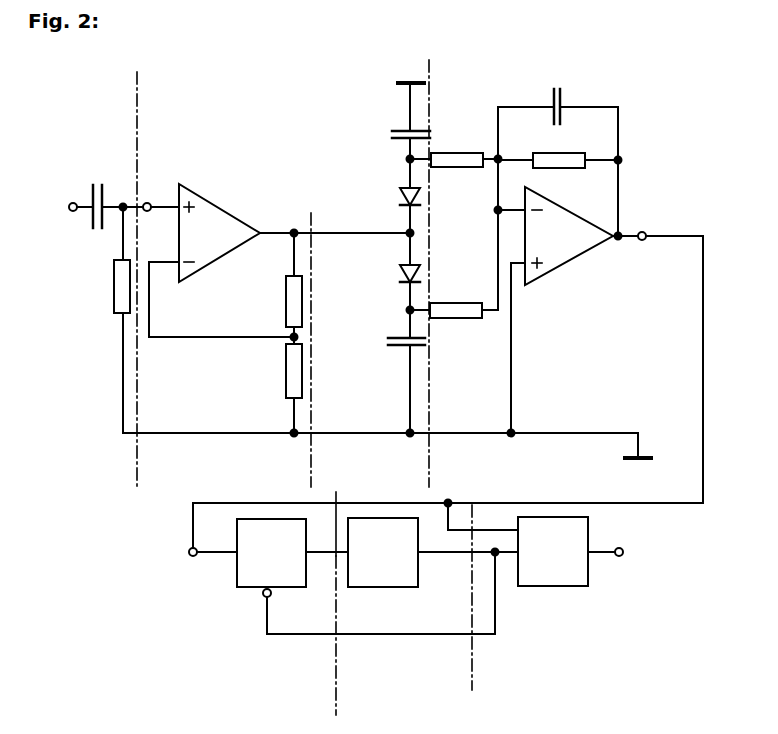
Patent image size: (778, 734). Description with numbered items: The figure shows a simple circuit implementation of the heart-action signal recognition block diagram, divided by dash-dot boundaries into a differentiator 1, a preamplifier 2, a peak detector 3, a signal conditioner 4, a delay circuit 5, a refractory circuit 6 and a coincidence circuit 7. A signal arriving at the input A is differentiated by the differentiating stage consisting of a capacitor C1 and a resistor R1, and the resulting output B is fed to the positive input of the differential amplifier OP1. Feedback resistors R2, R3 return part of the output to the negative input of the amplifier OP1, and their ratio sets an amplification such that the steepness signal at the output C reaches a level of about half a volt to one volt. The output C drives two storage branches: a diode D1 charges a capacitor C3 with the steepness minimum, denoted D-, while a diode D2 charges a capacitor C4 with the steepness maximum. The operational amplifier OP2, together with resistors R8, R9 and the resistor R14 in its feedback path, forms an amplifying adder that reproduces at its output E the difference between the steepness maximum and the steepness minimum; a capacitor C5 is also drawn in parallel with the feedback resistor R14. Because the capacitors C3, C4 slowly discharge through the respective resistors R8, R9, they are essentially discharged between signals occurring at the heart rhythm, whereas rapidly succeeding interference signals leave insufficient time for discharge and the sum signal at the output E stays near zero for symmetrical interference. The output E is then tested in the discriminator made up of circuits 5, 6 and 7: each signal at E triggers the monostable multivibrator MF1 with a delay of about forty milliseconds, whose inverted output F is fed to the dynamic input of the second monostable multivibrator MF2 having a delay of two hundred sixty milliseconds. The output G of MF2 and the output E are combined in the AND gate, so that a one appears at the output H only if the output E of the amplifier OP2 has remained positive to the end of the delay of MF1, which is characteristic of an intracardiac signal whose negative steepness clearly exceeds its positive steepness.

The differentiator 1 is at (185, 473).
The preamplifier 2 is at (345, 473).
The peak detector 3 is at (510, 473).
The signal conditioner 4 is at (436, 473).
The delay circuit 5 is at (370, 680).
The refractory circuit 6 is at (535, 680).
The coincidence circuit 7 is at (577, 624).
The input A is at (73, 197).
The differentiator output B is at (150, 198).
The preamplifier output C is at (284, 226).
The steepness minimum output D- is at (420, 217).
The output of the testing stage E is at (646, 226).
The delay circuit output F is at (320, 578).
The refractory circuit output G is at (443, 585).
The output H is at (617, 564).
The capacitor C1 is at (115, 192).
The resistor R1 is at (107, 320).
The differential amplifier OP1 is at (221, 260).
The feedback resistor R2 is at (274, 288).
The feedback resistor R3 is at (274, 390).
The capacitor C3 is at (395, 135).
The resistor R8 is at (456, 145).
The diode D1 is at (392, 212).
The diode D2 is at (392, 289).
The resistor R9 is at (454, 330).
The capacitor C4 is at (392, 382).
The capacitor C5 is at (558, 159).
The feedback resistor R14 is at (560, 145).
The operational amplifier OP2 is at (554, 312).
The monostable multivibrator MF1 is at (366, 576).
The second monostable multivibrator MF2 is at (433, 576).
The AND gate AND is at (517, 543).